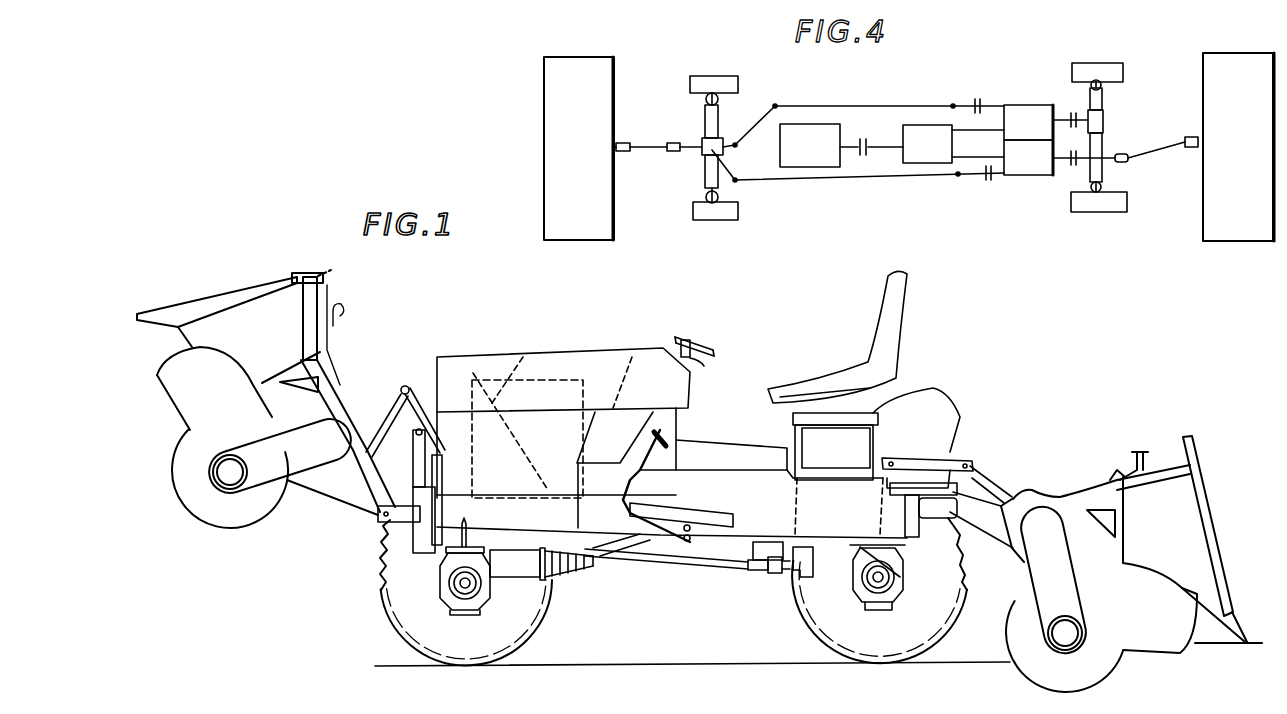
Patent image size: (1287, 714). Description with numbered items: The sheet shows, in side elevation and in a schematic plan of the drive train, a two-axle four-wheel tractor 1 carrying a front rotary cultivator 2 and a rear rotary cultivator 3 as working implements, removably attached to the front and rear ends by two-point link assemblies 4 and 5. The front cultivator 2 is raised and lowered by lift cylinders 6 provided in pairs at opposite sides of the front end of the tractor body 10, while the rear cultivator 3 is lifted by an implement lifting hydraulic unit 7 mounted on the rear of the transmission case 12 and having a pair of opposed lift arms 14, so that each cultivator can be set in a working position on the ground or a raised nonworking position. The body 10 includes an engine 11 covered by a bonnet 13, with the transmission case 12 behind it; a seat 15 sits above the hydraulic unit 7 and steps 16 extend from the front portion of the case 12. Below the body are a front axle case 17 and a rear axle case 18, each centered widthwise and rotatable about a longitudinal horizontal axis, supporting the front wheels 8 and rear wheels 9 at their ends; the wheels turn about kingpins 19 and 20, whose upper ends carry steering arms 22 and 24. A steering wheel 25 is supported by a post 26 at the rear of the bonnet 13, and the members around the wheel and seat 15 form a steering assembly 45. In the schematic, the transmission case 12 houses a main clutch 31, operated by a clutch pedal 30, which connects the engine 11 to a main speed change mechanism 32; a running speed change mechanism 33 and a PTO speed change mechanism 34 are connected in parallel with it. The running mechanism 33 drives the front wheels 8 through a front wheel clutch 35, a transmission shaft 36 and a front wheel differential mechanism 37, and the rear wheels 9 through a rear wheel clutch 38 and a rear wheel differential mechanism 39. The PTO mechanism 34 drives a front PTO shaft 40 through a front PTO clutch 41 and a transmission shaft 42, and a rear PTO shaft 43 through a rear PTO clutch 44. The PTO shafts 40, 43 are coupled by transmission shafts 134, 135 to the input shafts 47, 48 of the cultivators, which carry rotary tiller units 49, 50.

In FIG. 4, the tractor 1 is at (930, 182).
In FIG. 1, the tractor 1 is at (637, 332).
In FIG. 4, the front rotary cultivator 2 is at (585, 228).
In FIG. 1, the front rotary cultivator 2 is at (211, 540).
In FIG. 4, the rear rotary cultivator 3 is at (1246, 230).
In FIG. 1, the rear rotary cultivator 3 is at (1068, 480).
In FIG. 1, the two-point link assembly 4 is at (335, 500).
In FIG. 1, the two-point link assembly 5 is at (1008, 558).
In FIG. 1, the lift cylinder 6 is at (423, 522).
In FIG. 1, the implement lifting hydraulic unit 7 is at (888, 432).
In FIG. 4, the front wheel 8 is at (714, 84).
In FIG. 1, the front wheel 8 is at (467, 653).
In FIG. 4, the rear wheel 9 is at (1116, 64).
In FIG. 1, the rear wheel 9 is at (862, 642).
In FIG. 1, the tractor body 10 is at (702, 553).
In FIG. 4, the engine 11 is at (822, 157).
In FIG. 1, the engine 11 is at (487, 380).
In FIG. 1, the transmission case 12 is at (750, 522).
In FIG. 1, the bonnet 13 is at (578, 357).
In FIG. 1, the lift arm 14 is at (963, 460).
In FIG. 1, the seat 15 is at (898, 326).
In FIG. 1, the step 16 is at (690, 520).
In FIG. 4, the front axle case 17 is at (706, 118).
In FIG. 1, the front axle case 17 is at (446, 565).
In FIG. 4, the rear axle case 18 is at (1102, 100).
In FIG. 1, the rear axle case 18 is at (893, 560).
In FIG. 4, the kingpin 19 is at (719, 99).
In FIG. 4, the kingpin 20 is at (1093, 81).
In FIG. 1, the steering arm 22 is at (510, 556).
In FIG. 1, the steering arm 24 is at (833, 548).
In FIG. 1, the steering wheel 25 is at (690, 340).
In FIG. 1, the post 26 is at (704, 366).
In FIG. 1, the clutch pedal 30 is at (676, 436).
In FIG. 4, the main clutch 31 is at (862, 130).
In FIG. 4, the main speed change mechanism 32 is at (940, 156).
In FIG. 4, the running speed change mechanism 33 is at (1041, 134).
In FIG. 4, the PTO speed change mechanism 34 is at (1041, 170).
In FIG. 4, the front wheel clutch 35 is at (977, 99).
In FIG. 4, the transmission shaft 36 is at (805, 106).
In FIG. 4, the front wheel differential mechanism 37 is at (712, 146).
In FIG. 4, the rear wheel clutch 38 is at (1071, 113).
In FIG. 4, the rear wheel differential mechanism 39 is at (1104, 121).
In FIG. 4, the front PTO shaft 40 is at (673, 152).
In FIG. 4, the front PTO clutch 41 is at (988, 181).
In FIG. 4, the transmission shaft 42 is at (894, 176).
In FIG. 4, the rear PTO shaft 43 is at (1130, 163).
In FIG. 4, the rear PTO clutch 44 is at (1073, 166).
In FIG. 1, the steering assembly 45 is at (818, 325).
In FIG. 4, the input shaft 47 is at (623, 152).
In FIG. 4, the input shaft 48 is at (1198, 146).
In FIG. 1, the rotary tiller unit 49 is at (183, 447).
In FIG. 1, the rotary tiller unit 50 is at (1113, 652).
In FIG. 4, the transmission shaft 134 is at (645, 146).
In FIG. 4, the transmission shaft 135 is at (1160, 149).